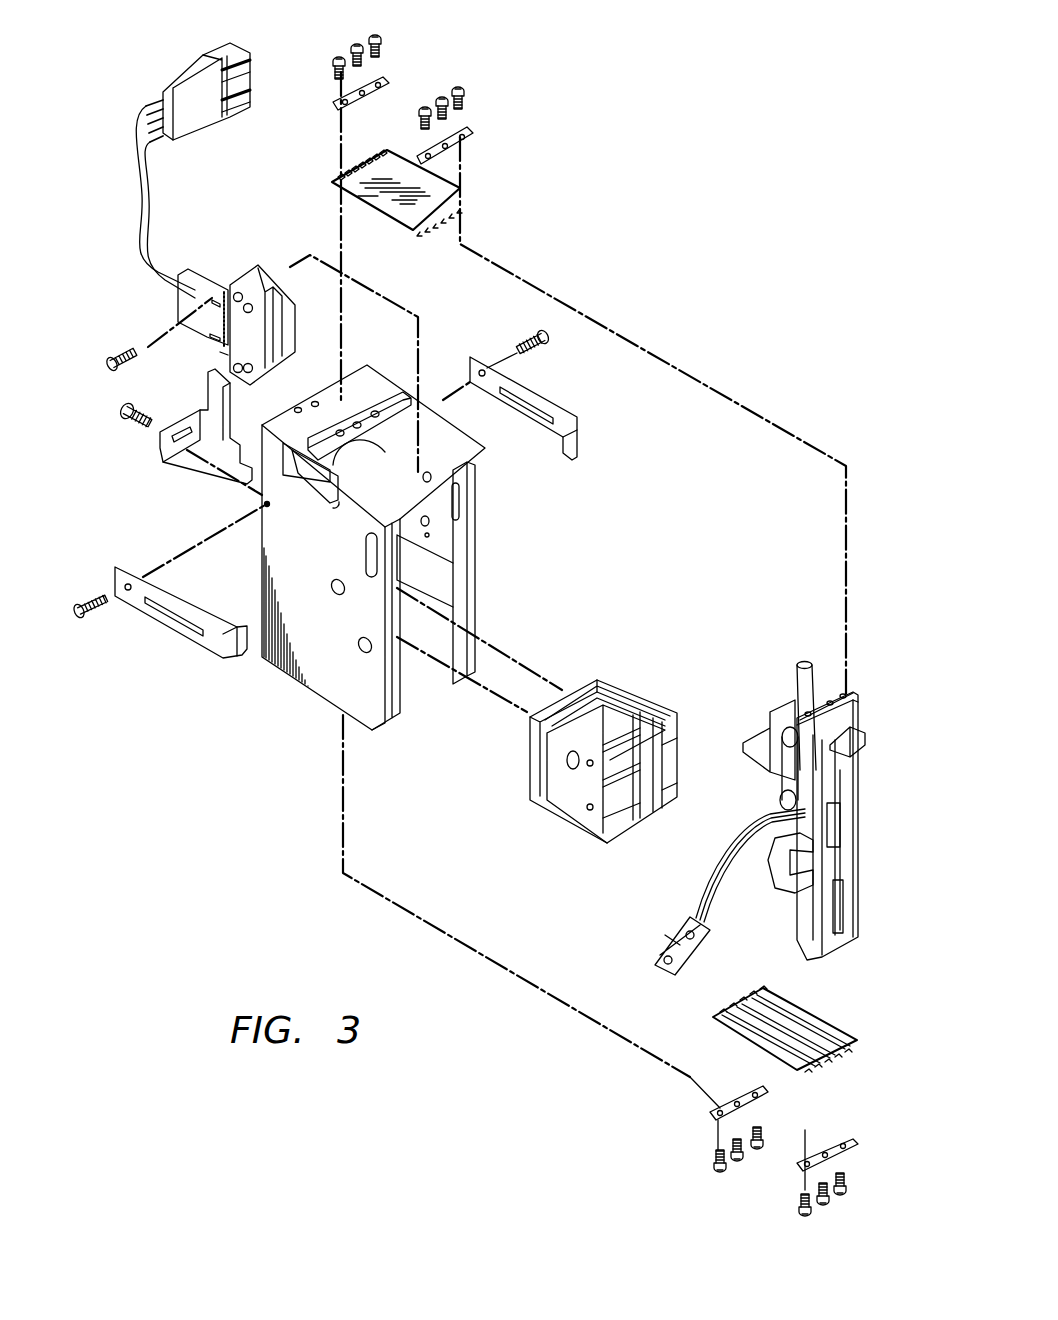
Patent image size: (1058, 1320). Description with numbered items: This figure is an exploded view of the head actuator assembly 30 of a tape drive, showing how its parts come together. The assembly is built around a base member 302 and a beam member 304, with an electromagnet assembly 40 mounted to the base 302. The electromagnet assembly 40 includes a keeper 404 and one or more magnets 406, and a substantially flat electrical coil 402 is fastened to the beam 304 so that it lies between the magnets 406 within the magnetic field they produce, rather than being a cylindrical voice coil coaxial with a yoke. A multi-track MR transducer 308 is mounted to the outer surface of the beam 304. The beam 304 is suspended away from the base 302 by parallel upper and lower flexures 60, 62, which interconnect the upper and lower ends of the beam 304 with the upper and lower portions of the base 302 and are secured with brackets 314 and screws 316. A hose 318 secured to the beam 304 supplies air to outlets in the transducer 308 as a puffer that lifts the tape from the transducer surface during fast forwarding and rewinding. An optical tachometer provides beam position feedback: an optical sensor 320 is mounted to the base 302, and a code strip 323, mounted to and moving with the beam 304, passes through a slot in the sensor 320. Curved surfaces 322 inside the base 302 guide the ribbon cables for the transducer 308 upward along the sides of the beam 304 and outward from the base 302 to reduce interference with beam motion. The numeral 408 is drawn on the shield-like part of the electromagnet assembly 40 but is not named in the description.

The head actuator assembly 30 is at (625, 63).
The electromagnet assembly 40 is at (615, 733).
The upper flexure 60 is at (397, 172).
The lower flexure 62 is at (790, 1022).
The base member 302 is at (401, 547).
The beam member 304 is at (844, 826).
The multi-track MR transducer 308 is at (870, 752).
The brackets 314 is at (582, 633).
The screws 316 is at (584, 609).
The hose 318 is at (775, 716).
The optical sensor 320 is at (236, 305).
The curved surfaces 322 is at (379, 465).
The code strip 323 is at (745, 746).
The electrical coil 402 is at (734, 892).
The keeper 404 is at (590, 764).
The magnets 406 is at (665, 784).
The shield 408 is at (593, 681).